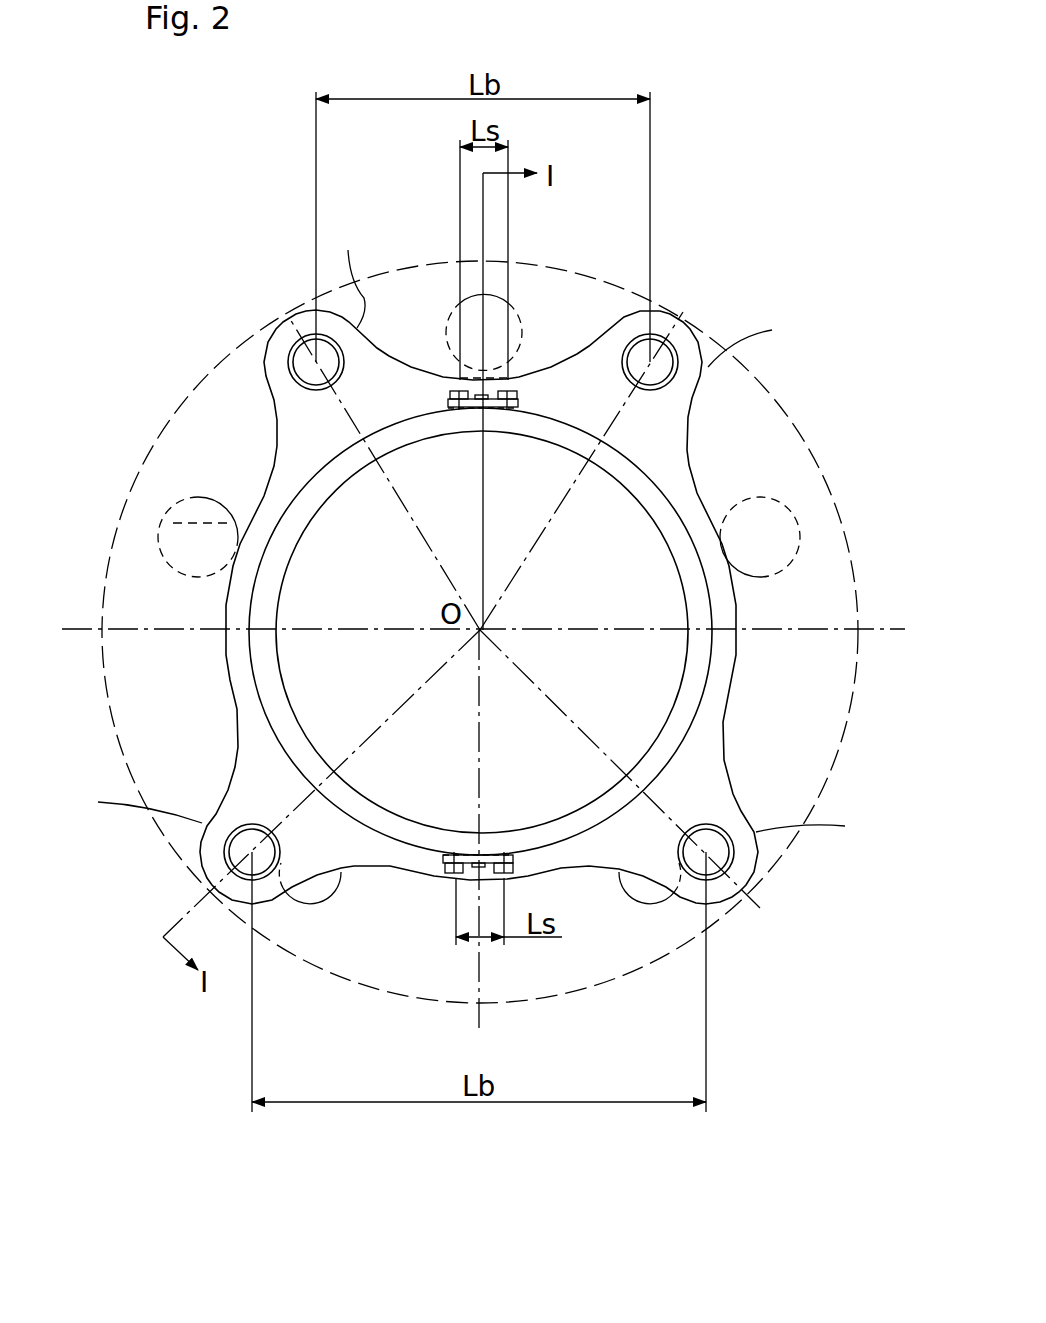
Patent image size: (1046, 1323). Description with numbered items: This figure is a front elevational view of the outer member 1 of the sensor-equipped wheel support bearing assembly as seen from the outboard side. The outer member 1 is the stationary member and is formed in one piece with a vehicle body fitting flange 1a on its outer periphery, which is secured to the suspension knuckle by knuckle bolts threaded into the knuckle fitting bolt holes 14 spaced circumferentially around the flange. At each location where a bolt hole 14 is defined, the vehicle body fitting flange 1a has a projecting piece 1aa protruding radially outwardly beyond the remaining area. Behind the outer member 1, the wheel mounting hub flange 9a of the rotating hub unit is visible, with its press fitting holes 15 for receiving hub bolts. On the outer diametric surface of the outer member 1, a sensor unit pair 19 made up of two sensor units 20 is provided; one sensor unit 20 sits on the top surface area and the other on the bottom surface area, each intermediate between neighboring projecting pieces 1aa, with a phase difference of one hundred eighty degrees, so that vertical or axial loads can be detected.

The outer member 1 is at (765, 408).
The vehicle body fitting flange 1a is at (752, 608).
The projecting piece 1aa is at (473, 528).
The wheel mounting hub flange 9a is at (226, 348).
The knuckle fitting bolt hole 14 is at (300, 346).
The press fitting hole 15 is at (447, 332).
The sensor unit pair 19 is at (552, 632).
The sensor unit 20 is at (531, 402).